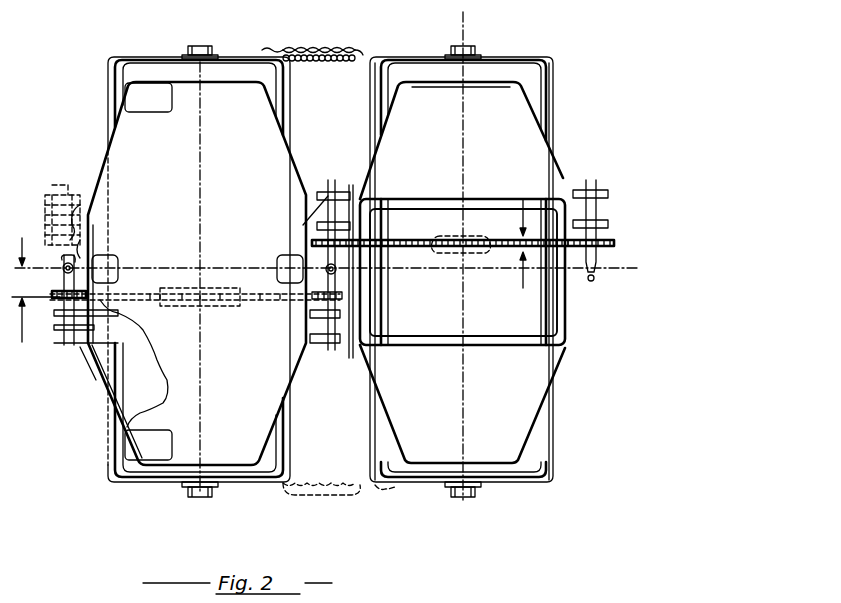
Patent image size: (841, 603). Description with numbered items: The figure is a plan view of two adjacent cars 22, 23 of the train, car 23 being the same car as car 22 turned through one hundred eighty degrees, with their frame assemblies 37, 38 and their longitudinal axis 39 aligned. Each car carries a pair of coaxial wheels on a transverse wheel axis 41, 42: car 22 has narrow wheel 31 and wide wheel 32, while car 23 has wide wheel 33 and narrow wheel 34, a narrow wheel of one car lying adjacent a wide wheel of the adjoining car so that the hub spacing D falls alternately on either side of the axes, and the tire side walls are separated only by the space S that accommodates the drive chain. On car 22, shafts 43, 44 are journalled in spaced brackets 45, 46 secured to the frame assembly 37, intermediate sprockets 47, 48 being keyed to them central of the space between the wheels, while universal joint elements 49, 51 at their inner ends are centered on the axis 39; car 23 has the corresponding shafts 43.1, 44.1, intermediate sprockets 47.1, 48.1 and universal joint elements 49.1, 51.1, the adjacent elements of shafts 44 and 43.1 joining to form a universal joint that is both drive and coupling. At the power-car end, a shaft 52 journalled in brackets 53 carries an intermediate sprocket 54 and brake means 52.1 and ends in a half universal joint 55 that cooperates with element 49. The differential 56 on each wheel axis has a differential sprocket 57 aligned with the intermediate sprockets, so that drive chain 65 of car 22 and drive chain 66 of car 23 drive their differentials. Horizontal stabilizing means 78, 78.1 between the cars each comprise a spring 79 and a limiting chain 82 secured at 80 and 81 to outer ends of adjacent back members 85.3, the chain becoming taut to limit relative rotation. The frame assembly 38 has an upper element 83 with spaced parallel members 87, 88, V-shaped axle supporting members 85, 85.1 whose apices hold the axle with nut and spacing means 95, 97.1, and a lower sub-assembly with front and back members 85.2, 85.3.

The car 22 is at (134, 520).
The car 23 is at (458, 518).
The wheel 31 is at (292, 418).
The wheel 32 is at (288, 124).
The wheel 33 is at (556, 417).
The wheel 34 is at (553, 112).
The frame assembly 37 is at (238, 494).
The frame assembly 38 is at (558, 62).
The longitudinal axis 39 is at (178, 268).
The transverse wheel axis 41 is at (200, 408).
The transverse wheel axis 42 is at (463, 398).
The shaft 43 is at (58, 360).
The shaft 43.1 is at (352, 178).
The shaft 44 is at (337, 291).
The shaft 44.1 is at (632, 188).
The brackets 45 is at (58, 344).
The brackets 46 is at (308, 330).
The intermediate sprocket 47 is at (98, 287).
The intermediate sprocket 47.1 is at (300, 222).
The intermediate sprocket 48 is at (300, 300).
The intermediate sprocket 48.1 is at (598, 248).
The universal joint element 49 is at (72, 262).
The universal joint element 49.1 is at (320, 262).
The universal joint element 51 is at (340, 266).
The universal joint element 51.1 is at (594, 282).
The shaft 52 is at (66, 194).
The brake means 52.1 is at (60, 194).
The brackets 53 is at (88, 200).
The intermediate sprocket 54 is at (94, 228).
The half universal joint 55 is at (62, 291).
The differential 56 is at (205, 310).
The differential sprocket 57 is at (176, 303).
The drive chain 65 is at (268, 296).
The drive chain 66 is at (502, 254).
The horizontal stabilizing means 78 is at (325, 56).
The horizontal stabilizing means 78.1 is at (355, 496).
The spring 79 is at (356, 62).
The securing point 80 is at (276, 50).
The securing point 81 is at (366, 52).
The limiting chain 82 is at (324, 44).
The upper element 83 is at (568, 352).
The V-shaped axle supporting member 85 is at (495, 484).
The V-shaped axle supporting member 85.1 is at (485, 58).
The front member 85.2 is at (115, 452).
The back member 85.3 is at (289, 76).
The parallel member 87 is at (86, 360).
The parallel member 88 is at (248, 246).
The nut means 95 is at (200, 44).
The spacing means 97.1 is at (181, 56).
The spacing D is at (36, 278).
The space S is at (520, 254).